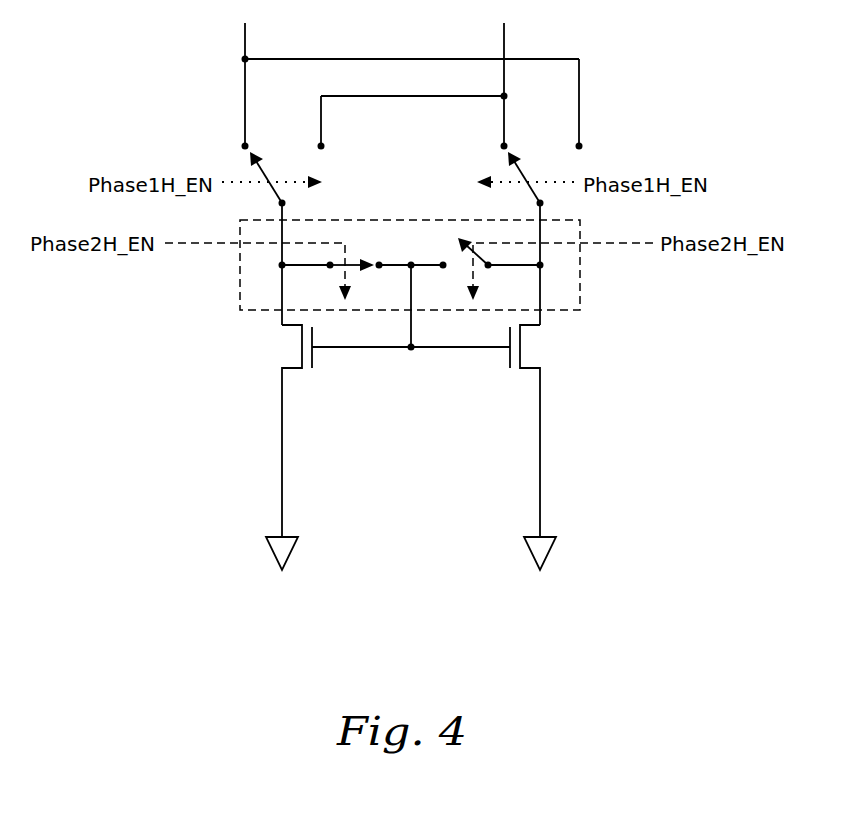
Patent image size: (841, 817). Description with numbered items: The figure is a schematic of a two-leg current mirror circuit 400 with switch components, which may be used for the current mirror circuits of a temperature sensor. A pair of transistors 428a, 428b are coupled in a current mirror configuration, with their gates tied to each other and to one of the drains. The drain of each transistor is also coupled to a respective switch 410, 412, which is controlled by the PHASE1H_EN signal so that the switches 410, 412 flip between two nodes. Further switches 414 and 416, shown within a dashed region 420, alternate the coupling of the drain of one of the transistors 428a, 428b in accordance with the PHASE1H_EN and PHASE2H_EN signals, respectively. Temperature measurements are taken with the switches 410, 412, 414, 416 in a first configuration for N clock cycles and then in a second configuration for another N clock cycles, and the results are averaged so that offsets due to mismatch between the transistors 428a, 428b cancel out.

The current mirror circuit 400 is at (163, 543).
The switch 410 is at (257, 170).
The switch 412 is at (520, 172).
The switch 414 is at (353, 259).
The switch 416 is at (477, 246).
The switching block 420 is at (562, 313).
The transistor 428a is at (313, 358).
The transistor 428b is at (507, 358).